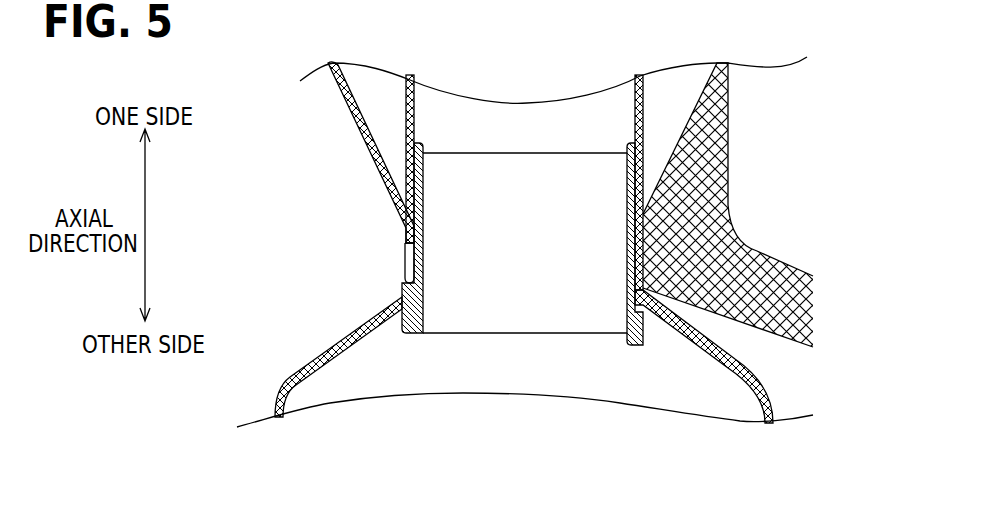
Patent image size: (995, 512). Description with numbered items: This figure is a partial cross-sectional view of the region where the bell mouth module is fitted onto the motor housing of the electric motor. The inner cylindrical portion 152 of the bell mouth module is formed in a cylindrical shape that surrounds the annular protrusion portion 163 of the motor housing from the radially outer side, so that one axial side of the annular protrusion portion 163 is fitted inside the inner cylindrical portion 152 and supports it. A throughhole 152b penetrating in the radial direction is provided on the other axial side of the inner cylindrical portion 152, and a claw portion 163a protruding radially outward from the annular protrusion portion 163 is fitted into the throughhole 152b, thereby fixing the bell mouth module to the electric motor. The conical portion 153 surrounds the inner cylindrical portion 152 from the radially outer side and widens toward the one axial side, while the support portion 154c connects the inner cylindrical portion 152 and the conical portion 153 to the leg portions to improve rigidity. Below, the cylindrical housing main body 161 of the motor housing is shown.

The inner cylindrical portion 152 is at (428, 113).
The throughhole 152b is at (405, 245).
The conical portion 153 is at (342, 127).
The support portion 154c is at (750, 254).
The housing main body 161 is at (348, 347).
The annular protrusion portion 163 is at (627, 250).
The claw portion 163a is at (405, 262).